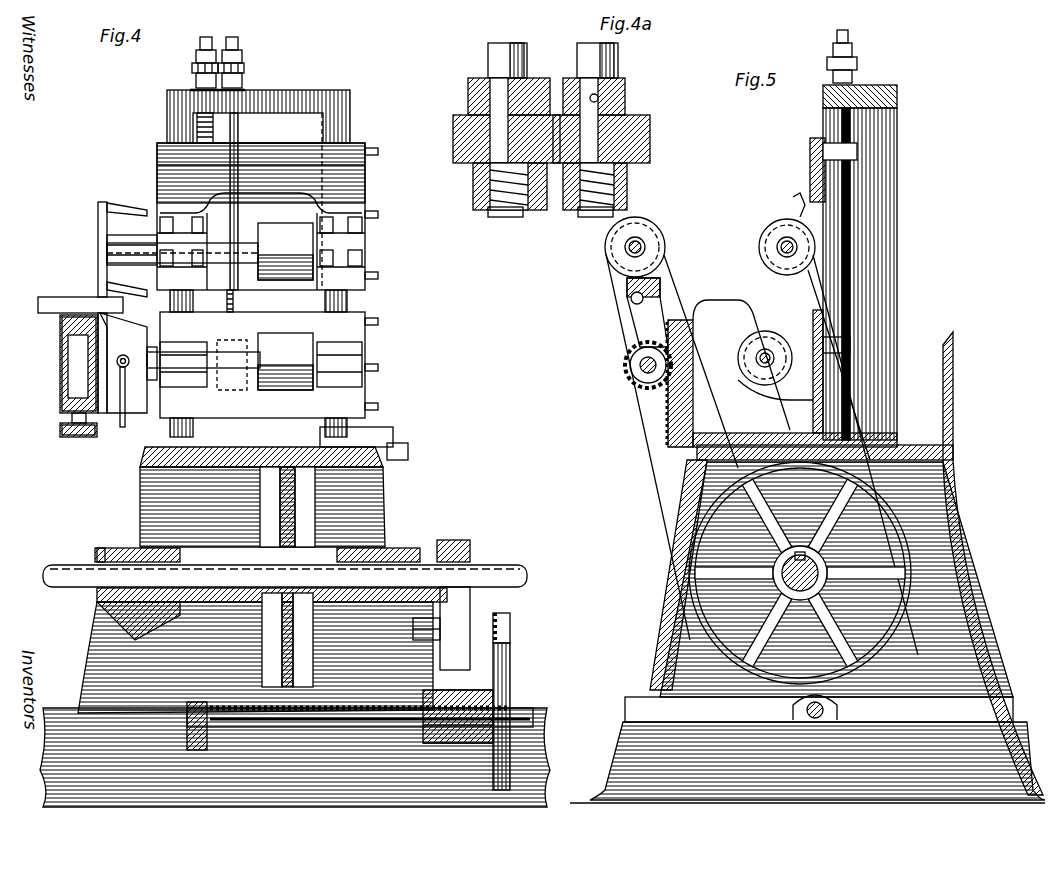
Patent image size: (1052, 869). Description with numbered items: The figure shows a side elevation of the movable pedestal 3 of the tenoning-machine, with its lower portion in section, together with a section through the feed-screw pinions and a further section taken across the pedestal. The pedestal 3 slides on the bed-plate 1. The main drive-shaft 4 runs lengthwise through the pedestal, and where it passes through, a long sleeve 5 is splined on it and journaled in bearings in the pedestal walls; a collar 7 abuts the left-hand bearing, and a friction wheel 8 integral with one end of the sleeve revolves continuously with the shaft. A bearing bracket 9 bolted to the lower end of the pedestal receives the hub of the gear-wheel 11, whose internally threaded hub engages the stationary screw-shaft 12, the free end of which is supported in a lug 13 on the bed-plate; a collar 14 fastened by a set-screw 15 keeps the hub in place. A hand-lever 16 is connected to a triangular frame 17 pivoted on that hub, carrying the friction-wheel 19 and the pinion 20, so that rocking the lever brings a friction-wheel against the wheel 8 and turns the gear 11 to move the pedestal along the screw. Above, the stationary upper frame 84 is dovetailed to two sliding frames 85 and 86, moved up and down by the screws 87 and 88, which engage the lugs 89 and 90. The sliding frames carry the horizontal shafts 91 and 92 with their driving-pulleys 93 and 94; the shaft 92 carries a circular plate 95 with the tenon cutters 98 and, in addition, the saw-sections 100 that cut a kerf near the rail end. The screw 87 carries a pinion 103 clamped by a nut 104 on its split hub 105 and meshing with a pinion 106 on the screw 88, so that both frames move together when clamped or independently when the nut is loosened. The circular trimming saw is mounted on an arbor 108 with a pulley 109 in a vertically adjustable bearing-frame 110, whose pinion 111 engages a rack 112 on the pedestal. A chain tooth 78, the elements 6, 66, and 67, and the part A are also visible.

In FIG. 4, the bed-plate 1 is at (295, 757).
In FIG. 5, the bed-plate 1 is at (623, 750).
In FIG. 4, the longitudinally-adjustable pedestal 3 is at (97, 690).
In FIG. 5, the longitudinally-adjustable pedestal 3 is at (985, 666).
In FIG. 4, the main drive-shaft 4 is at (43, 579).
In FIG. 4, the sleeve 5 is at (320, 290).
In FIG. 4, the clamp 6 is at (112, 548).
In FIG. 4, the collar 7 is at (97, 555).
In FIG. 4, the friction wheel 8 is at (455, 548).
In FIG. 4, the bearing bracket 9 is at (470, 743).
In FIG. 4, the gear-wheel 11 is at (510, 673).
In FIG. 4, the screw-shaft 12 is at (360, 736).
In FIG. 5, the screw-shaft 12 is at (808, 716).
In FIG. 4, the lug 13 is at (187, 740).
In FIG. 4, the collar 14 is at (436, 693).
In FIG. 4, the set-screw 15 is at (430, 745).
In FIG. 4, the hand-lever 16 is at (423, 728).
In FIG. 4, the triangular frame 17 is at (480, 613).
In FIG. 4, the friction-wheel 19 is at (439, 631).
In FIG. 4, the pinion 20 is at (510, 635).
In FIG. 4, the slide 66 is at (60, 377).
In FIG. 4, the plate 67 is at (63, 438).
In FIG. 4, the projecting tooth 78 is at (60, 330).
In FIG. 4, the upper frame 84 is at (350, 92).
In FIG. 5, the upper frame 84 is at (897, 97).
In FIG. 4, the sliding frame 85 is at (365, 178).
In FIG. 5, the sliding frame 85 is at (810, 165).
In FIG. 4, the sliding frame 86 is at (365, 345).
In FIG. 5, the sliding frame 86 is at (834, 371).
In FIG. 4, the screw 87 is at (197, 126).
In FIG. 4A, the screw 87 is at (505, 217).
In FIG. 4, the screw 88 is at (238, 128).
In FIG. 4A, the screw 88 is at (627, 178).
In FIG. 5, the screw 88 is at (852, 232).
In FIG. 4, the lug 89 is at (157, 166).
In FIG. 5, the lug 89 is at (855, 153).
In FIG. 4, the lug 90 is at (258, 378).
In FIG. 5, the lug 90 is at (852, 345).
In FIG. 4, the horizontal shaft 91 is at (245, 246).
In FIG. 5, the horizontal shaft 91 is at (772, 226).
In FIG. 4, the horizontal shaft 92 is at (247, 347).
In FIG. 5, the horizontal shaft 92 is at (762, 352).
In FIG. 4, the driving-pulley 93 is at (285, 251).
In FIG. 5, the driving-pulley 93 is at (760, 252).
In FIG. 4, the driving-pulley 94 is at (285, 361).
In FIG. 5, the driving-pulley 94 is at (770, 350).
In FIG. 4, the circular plate 95 is at (98, 234).
In FIG. 4, the tenon cutters 98 is at (143, 207).
In FIG. 4, the saw-sections 100 is at (121, 428).
In FIG. 4, the pinion 103 is at (192, 62).
In FIG. 4A, the pinion 103 is at (463, 150).
In FIG. 4A, the nut 104 is at (468, 95).
In FIG. 4A, the split hub 105 is at (530, 82).
In FIG. 4, the pinion 106 is at (244, 68).
In FIG. 4A, the pinion 106 is at (650, 125).
In FIG. 5, the pinion 106 is at (857, 62).
In FIG. 5, the saw arbor 108 is at (641, 247).
In FIG. 5, the pulley 109 is at (615, 258).
In FIG. 5, the bearing-frame 110 is at (640, 326).
In FIG. 5, the pinion 111 is at (625, 370).
In FIG. 5, the rack 112 is at (695, 395).
In FIG. 4, the flywheel A is at (38, 305).
In FIG. 5, the flywheel A is at (812, 570).